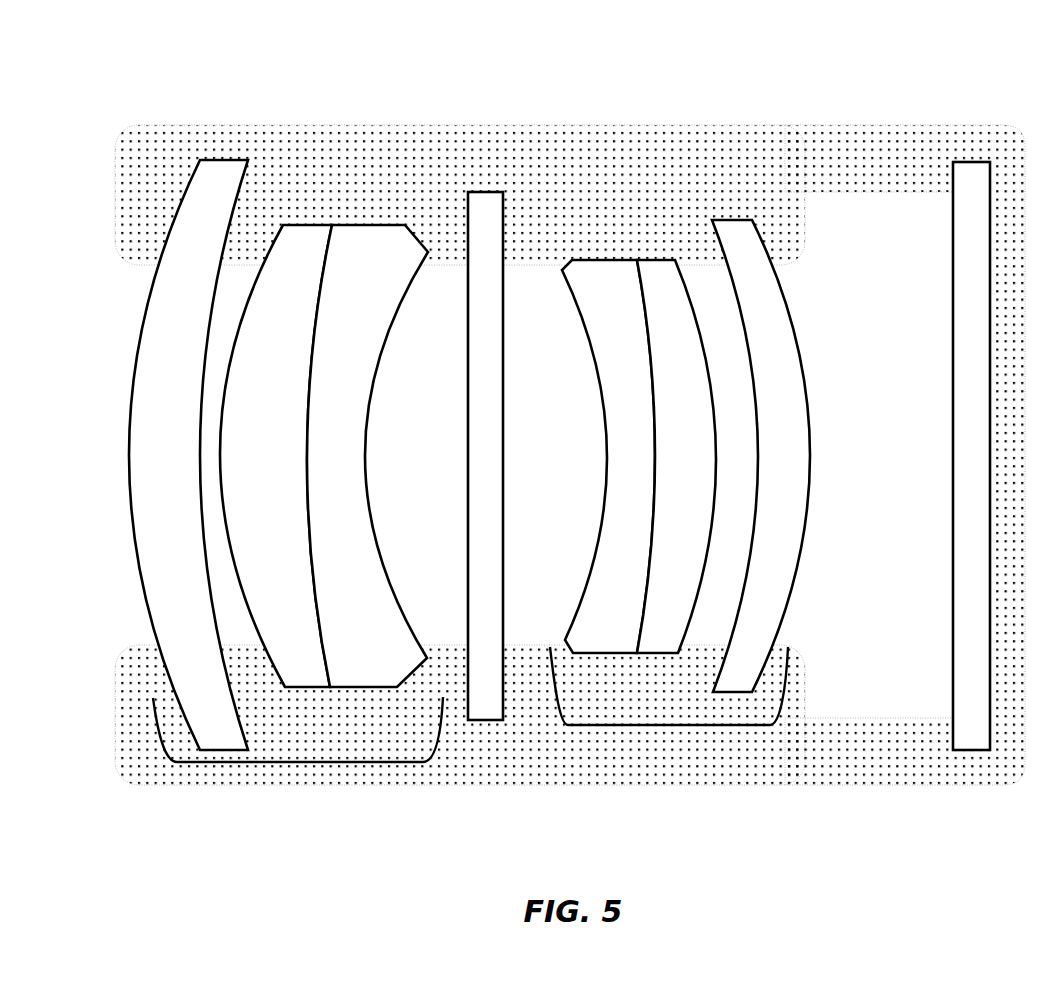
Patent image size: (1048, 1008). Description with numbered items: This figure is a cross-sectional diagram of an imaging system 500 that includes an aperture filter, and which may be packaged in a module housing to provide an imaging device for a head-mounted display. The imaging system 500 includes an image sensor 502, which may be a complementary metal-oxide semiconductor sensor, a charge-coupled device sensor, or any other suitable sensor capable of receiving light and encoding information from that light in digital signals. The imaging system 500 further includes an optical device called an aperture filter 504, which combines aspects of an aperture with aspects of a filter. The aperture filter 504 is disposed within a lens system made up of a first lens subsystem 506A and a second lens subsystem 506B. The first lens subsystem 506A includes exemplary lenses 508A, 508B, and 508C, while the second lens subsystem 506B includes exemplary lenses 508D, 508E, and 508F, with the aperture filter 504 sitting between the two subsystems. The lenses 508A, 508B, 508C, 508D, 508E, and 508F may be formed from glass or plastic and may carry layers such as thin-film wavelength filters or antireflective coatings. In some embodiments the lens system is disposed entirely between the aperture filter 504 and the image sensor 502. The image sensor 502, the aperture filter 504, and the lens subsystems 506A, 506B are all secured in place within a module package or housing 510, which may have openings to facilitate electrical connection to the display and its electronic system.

The imaging system 500 is at (278, 68).
The image sensor 502 is at (953, 588).
The aperture filter 504 is at (503, 525).
The first lens subsystem 506A is at (286, 514).
The second lens subsystem 506B is at (709, 542).
The lens 508A is at (141, 476).
The lens 508B is at (241, 476).
The lens 508C is at (367, 456).
The lens 508D is at (570, 628).
The lens 508E is at (666, 469).
The lens 508F is at (803, 357).
The housing 510 is at (902, 125).